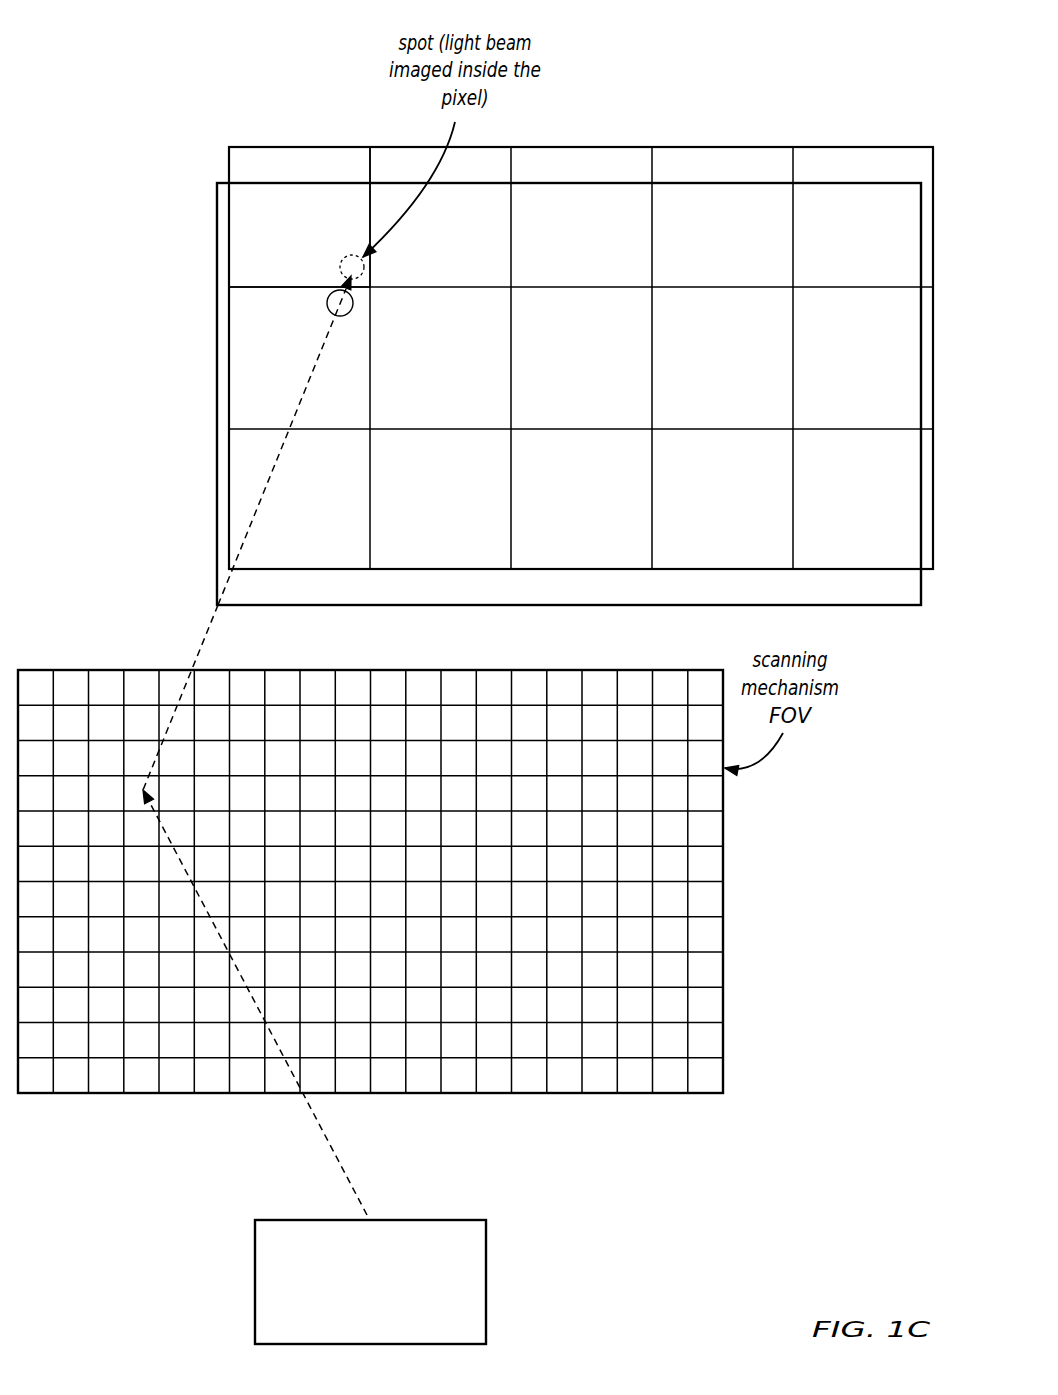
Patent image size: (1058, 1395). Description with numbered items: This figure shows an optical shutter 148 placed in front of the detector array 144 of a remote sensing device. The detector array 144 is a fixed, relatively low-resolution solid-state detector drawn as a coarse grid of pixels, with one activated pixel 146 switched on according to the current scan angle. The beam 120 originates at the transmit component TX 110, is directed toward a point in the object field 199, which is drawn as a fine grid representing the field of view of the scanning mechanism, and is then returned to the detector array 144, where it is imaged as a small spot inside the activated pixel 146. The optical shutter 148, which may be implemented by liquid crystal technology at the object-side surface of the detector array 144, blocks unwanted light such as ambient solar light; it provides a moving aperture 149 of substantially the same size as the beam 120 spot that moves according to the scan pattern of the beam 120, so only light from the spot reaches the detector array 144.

The detector array 144 is at (229, 163).
The activated pixel 146 is at (300, 167).
The optical shutter 148 is at (215, 390).
The moving aperture 149 is at (322, 301).
The beam 120 is at (255, 745).
The object field 199 is at (447, 881).
The transmit component 110 is at (370, 1282).